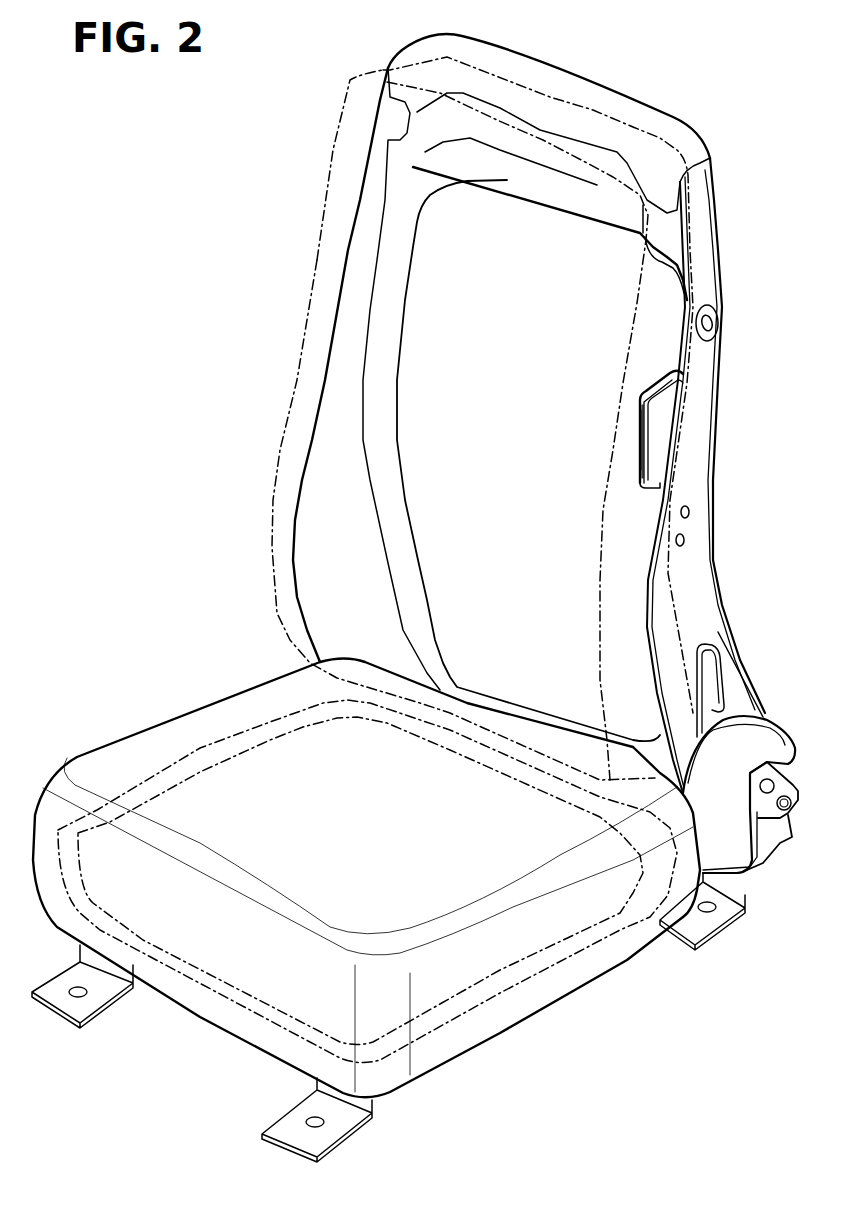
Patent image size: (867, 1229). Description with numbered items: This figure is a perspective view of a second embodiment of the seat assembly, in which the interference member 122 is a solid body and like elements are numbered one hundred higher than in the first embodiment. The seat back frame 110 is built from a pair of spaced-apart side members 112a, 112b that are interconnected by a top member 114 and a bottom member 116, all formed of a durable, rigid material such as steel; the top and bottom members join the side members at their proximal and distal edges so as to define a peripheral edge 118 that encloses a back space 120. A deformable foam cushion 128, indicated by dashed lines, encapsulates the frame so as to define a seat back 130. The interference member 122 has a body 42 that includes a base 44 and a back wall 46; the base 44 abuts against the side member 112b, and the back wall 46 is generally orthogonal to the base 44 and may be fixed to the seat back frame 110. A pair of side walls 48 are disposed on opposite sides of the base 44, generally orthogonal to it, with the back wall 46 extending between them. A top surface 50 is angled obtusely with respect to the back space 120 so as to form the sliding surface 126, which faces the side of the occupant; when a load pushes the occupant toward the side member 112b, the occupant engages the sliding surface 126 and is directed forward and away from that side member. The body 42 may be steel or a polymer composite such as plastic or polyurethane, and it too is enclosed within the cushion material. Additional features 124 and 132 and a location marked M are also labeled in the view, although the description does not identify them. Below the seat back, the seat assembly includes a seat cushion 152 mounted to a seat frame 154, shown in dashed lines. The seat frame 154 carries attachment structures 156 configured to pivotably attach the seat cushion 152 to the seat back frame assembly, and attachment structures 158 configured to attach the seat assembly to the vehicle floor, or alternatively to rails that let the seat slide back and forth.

The seat back frame 110 is at (720, 65).
The side member 112a is at (333, 378).
The side member 112b is at (712, 282).
The top member 114 is at (672, 130).
The bottom member 116 is at (528, 717).
The peripheral edge 118 is at (532, 203).
The back space 120 is at (542, 454).
The interference member 122 is at (604, 450).
The slot 124 is at (645, 607).
The sliding surface 126 is at (638, 432).
The foam cushion 128 is at (272, 503).
The seat back 130 is at (657, 95).
The cover edge 132 is at (345, 157).
The body 42 is at (631, 472).
The base 44 is at (662, 423).
The back wall 46 is at (683, 363).
The side walls 48 is at (668, 373).
The top surface 50 is at (586, 437).
The mounting holes M is at (690, 525).
The seat cushion 152 is at (533, 1033).
The seat frame 154 is at (598, 962).
The attachment structures 156 is at (730, 853).
The attachment structures 158 is at (100, 1017).